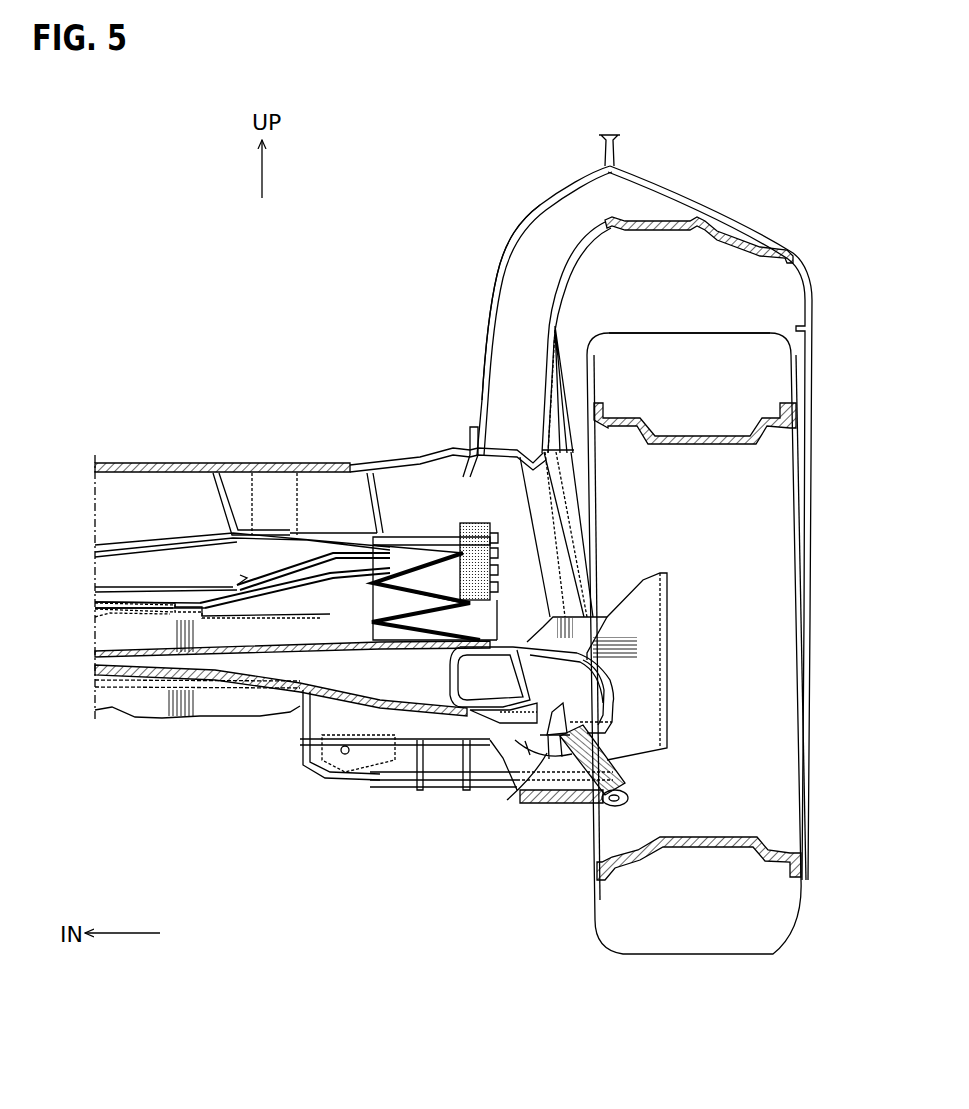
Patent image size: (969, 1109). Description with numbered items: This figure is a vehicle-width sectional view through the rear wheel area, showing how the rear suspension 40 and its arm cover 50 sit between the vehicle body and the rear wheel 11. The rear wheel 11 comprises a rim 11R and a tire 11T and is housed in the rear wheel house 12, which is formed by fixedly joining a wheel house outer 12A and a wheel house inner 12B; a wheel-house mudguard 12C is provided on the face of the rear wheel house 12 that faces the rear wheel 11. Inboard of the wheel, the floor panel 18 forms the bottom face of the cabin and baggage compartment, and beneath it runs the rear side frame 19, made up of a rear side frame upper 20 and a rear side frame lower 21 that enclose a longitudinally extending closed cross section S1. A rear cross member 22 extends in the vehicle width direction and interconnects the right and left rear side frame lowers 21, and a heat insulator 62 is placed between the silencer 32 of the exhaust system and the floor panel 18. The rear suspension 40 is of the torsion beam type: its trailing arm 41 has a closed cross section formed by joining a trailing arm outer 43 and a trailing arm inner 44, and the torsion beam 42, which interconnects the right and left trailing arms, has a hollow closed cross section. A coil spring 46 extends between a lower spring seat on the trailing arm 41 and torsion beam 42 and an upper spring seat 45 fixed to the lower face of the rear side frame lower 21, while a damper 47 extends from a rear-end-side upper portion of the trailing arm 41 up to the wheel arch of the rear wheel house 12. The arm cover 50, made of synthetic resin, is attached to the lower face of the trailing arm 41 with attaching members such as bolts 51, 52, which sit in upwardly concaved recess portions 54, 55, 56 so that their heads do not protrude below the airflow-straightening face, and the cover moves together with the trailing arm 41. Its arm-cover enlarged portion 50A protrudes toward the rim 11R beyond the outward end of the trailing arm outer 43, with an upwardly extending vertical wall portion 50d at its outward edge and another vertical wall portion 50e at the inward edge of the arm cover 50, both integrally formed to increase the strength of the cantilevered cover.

The rear wheel 11 is at (722, 326).
The tire 11T is at (637, 332).
The rim 11R is at (694, 437).
The rear wheel house 12 is at (697, 194).
The wheel house outer 12A is at (666, 190).
The wheel house inner 12B is at (516, 231).
The wheel-house mudguard 12C is at (733, 236).
The floor panel 18 is at (232, 462).
The rear side frame 19 is at (421, 446).
The rear side frame upper 20 is at (378, 447).
The rear side frame lower 21 is at (372, 505).
The rear cross member 22 is at (207, 504).
The silencer 32 is at (143, 718).
The rear suspension 40 is at (90, 658).
The trailing arm 41 is at (628, 686).
The torsion beam 42 is at (128, 650).
The trailing arm outer 43 is at (598, 707).
The trailing arm inner 44 is at (450, 673).
The upper spring seat 45 is at (477, 522).
The coil spring 46 is at (463, 607).
The damper 47 is at (565, 506).
The arm cover 50 is at (392, 786).
The arm-cover enlarged portion 50A is at (628, 790).
The vertical wall portion 50d is at (612, 722).
The vertical wall portion 50e is at (330, 697).
The bolt 51 is at (543, 747).
The bolt 52 is at (343, 753).
The recess portion 54 is at (553, 760).
The recess portion 55 is at (300, 753).
The recess portion 56 is at (610, 806).
The heat insulator 62 is at (177, 597).
The rear-side-frame closed cross section S1 is at (412, 491).